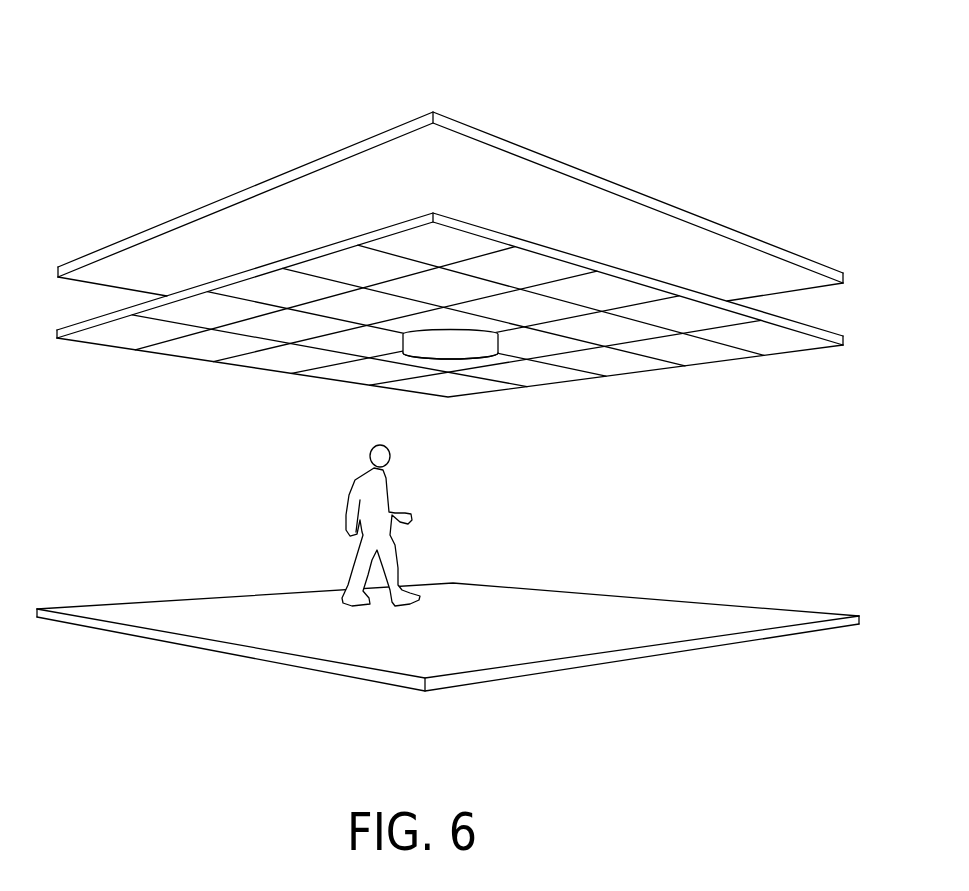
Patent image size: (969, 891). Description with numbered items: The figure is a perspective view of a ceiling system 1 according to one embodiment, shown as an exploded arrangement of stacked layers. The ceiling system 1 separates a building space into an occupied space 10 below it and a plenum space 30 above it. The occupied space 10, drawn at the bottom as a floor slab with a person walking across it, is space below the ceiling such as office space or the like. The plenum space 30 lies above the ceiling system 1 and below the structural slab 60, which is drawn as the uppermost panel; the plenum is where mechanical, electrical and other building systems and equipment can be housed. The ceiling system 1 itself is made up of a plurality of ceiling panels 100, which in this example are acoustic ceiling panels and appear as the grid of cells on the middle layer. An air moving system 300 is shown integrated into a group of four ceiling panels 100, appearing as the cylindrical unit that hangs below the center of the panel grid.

The ceiling system 1 is at (450, 245).
The occupied space 10 is at (186, 492).
The plenum space 30 is at (450, 159).
The structural slab 60 is at (270, 233).
The ceiling panels 100 is at (535, 268).
The air moving system 300 is at (450, 352).